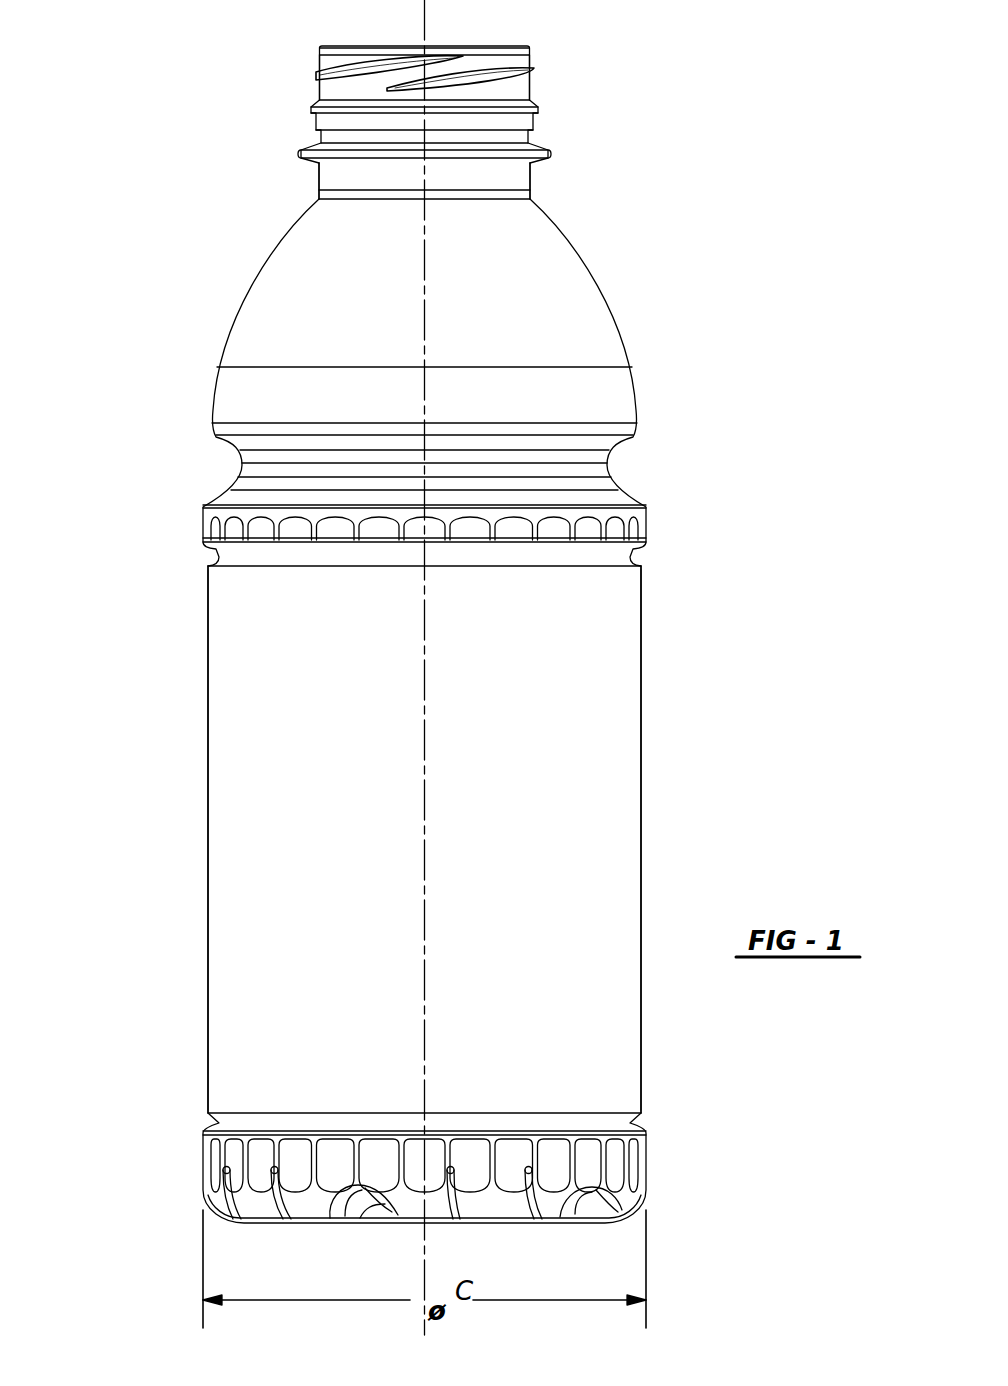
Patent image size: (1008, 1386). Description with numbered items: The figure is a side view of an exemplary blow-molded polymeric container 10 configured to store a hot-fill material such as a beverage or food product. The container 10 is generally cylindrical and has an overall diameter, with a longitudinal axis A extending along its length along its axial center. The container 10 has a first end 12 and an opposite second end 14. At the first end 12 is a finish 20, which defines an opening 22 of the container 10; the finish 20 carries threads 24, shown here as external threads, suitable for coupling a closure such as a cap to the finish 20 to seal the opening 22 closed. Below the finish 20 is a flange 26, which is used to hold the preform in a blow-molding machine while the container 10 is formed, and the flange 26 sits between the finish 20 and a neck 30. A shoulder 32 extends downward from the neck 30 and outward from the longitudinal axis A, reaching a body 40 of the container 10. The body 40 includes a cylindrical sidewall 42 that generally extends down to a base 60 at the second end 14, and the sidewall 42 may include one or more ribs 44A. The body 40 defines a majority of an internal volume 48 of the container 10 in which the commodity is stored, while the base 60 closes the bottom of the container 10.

The container 10 is at (108, 117).
The longitudinal axis A is at (425, 22).
The first end 12 is at (503, 48).
The opening 22 is at (472, 47).
The finish 20 is at (530, 58).
The threads 24 is at (317, 72).
The flange 26 is at (547, 153).
The neck 30 is at (530, 177).
The shoulder 32 is at (618, 320).
The rib 44A is at (607, 463).
The body 40 is at (640, 755).
The cylindrical sidewall 42 is at (208, 882).
The internal volume 48 is at (360, 755).
The second end 14 is at (493, 1220).
The base 60 is at (408, 1222).